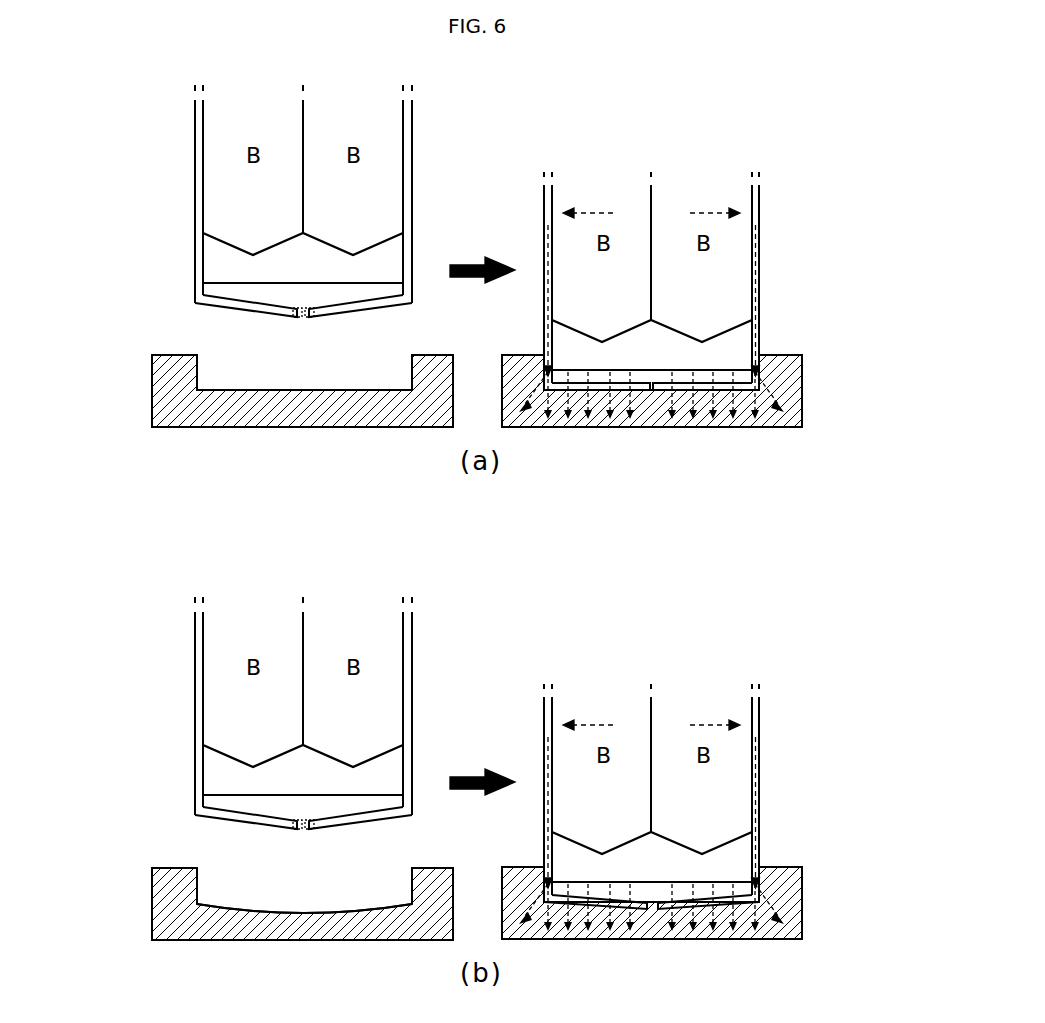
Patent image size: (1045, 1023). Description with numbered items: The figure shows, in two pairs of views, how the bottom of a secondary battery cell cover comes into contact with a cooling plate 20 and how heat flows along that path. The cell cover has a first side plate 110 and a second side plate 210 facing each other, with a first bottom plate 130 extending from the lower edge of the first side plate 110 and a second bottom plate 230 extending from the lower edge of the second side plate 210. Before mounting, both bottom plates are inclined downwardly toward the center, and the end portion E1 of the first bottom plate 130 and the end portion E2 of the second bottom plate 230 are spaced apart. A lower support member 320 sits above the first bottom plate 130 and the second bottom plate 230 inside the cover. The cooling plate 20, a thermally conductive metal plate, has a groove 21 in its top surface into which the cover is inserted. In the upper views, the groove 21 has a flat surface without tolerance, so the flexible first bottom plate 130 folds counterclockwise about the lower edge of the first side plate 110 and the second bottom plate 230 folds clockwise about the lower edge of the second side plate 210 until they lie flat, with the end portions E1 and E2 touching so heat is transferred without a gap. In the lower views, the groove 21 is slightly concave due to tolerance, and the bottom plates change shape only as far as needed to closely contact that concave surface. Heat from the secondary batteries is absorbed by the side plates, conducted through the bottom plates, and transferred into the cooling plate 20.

The cooling plate 20 is at (132, 383).
The groove 21 is at (247, 390).
The first side plate 110 is at (412, 153).
The first bottom plate 130 is at (363, 308).
The second side plate 210 is at (196, 153).
The second bottom plate 230 is at (243, 308).
The lower support member 320 is at (203, 288).
The end portion of the first bottom plate E1 is at (309, 318).
The end portion of the second bottom plate E2 is at (297, 318).